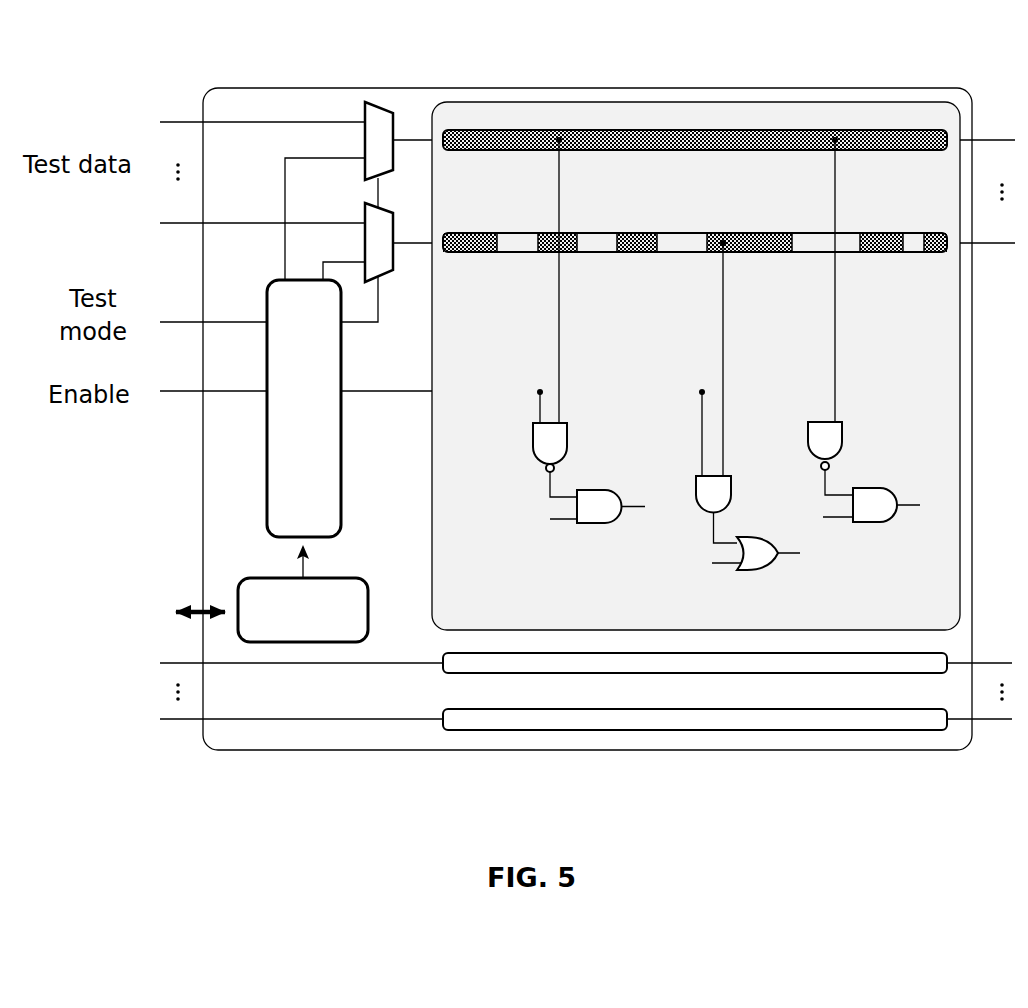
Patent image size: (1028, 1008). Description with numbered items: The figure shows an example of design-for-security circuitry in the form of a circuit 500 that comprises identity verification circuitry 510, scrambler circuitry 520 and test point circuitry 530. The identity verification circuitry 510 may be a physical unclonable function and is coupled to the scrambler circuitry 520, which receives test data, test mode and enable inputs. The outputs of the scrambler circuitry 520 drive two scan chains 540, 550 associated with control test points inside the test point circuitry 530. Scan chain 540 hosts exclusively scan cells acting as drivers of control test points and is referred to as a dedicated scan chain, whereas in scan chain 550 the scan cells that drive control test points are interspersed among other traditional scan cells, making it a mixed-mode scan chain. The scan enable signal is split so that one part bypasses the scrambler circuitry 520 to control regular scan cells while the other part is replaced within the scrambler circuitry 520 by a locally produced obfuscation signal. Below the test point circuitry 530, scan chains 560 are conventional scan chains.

The circuit 500 is at (206, 760).
The identity verification circuitry 510 is at (272, 594).
The scrambler circuitry 520 is at (304, 408).
The test point circuitry 530 is at (696, 366).
The dedicated scan chain 540 is at (879, 130).
The mixed-mode scan chain 550 is at (862, 232).
The conventional scan chains 560 is at (717, 687).